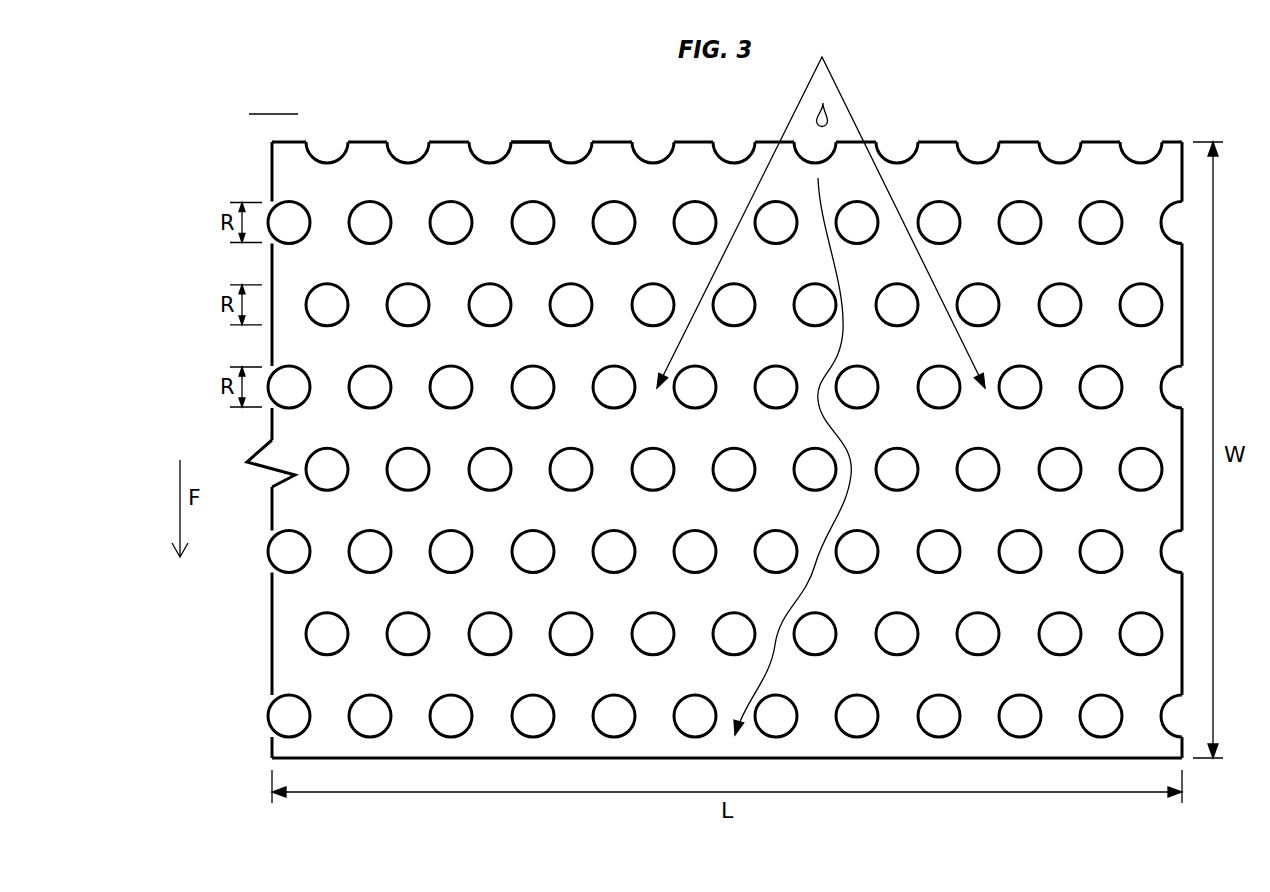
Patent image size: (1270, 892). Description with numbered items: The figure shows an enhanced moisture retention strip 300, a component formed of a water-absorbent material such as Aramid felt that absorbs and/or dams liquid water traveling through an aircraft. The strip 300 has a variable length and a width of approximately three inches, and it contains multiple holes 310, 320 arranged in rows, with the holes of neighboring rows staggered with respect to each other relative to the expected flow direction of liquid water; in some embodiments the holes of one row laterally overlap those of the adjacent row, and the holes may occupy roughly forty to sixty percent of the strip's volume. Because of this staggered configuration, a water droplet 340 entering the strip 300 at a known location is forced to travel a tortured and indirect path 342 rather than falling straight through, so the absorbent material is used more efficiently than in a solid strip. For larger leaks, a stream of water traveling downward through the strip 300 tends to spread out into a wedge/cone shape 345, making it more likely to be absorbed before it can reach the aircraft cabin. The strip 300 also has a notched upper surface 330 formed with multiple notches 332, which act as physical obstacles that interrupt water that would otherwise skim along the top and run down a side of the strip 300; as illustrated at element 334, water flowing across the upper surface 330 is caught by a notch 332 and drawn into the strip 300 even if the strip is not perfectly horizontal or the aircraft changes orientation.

The enhanced moisture retention strip 300 is at (227, 680).
The hole 310 is at (502, 290).
The hole 320 is at (548, 372).
The notched upper surface 330 is at (531, 136).
The notch 332 is at (408, 148).
The interrupted water flow 334 is at (327, 150).
The water droplet 340 is at (830, 122).
The path 342 is at (848, 453).
The wedge/cone shape 345 is at (831, 74).